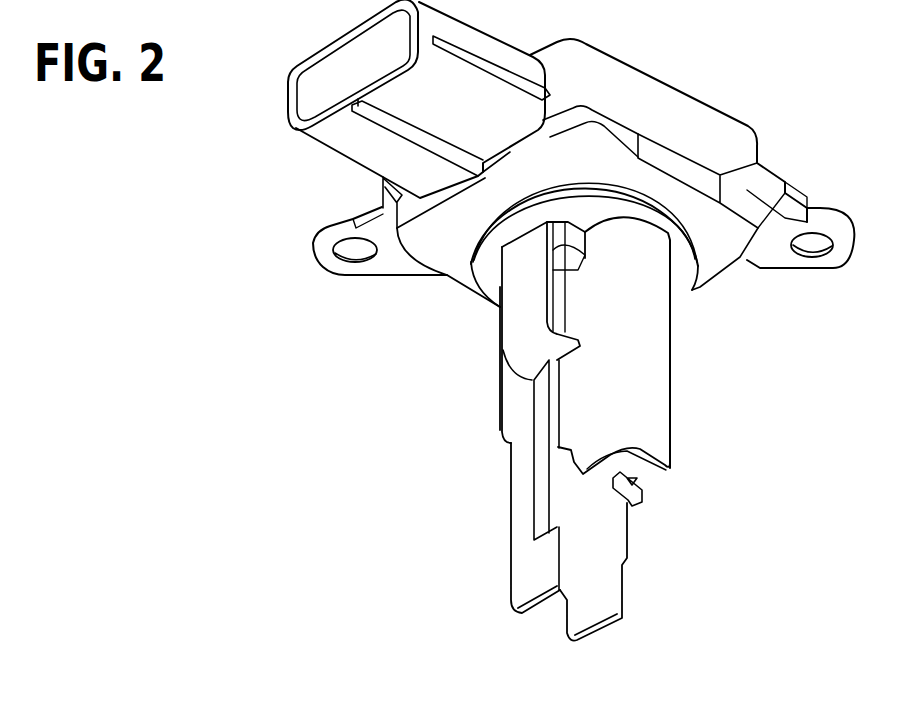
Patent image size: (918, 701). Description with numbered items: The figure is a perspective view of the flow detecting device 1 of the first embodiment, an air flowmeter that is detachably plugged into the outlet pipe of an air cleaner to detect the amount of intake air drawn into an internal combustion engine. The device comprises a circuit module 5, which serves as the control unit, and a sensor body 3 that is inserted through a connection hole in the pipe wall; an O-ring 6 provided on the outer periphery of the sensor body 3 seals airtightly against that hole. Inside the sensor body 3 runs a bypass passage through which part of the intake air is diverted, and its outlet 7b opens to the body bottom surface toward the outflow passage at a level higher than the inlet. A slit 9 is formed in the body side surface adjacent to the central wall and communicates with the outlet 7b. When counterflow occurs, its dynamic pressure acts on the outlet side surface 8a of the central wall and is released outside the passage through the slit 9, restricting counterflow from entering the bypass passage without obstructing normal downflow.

The flow detecting device 1 is at (703, 55).
The circuit module 5 is at (722, 110).
The O-ring 6 is at (658, 198).
The sensor body 3 is at (650, 342).
The slit 9 is at (570, 467).
The outlet side surface 8a is at (607, 542).
The outlet 7b is at (637, 480).